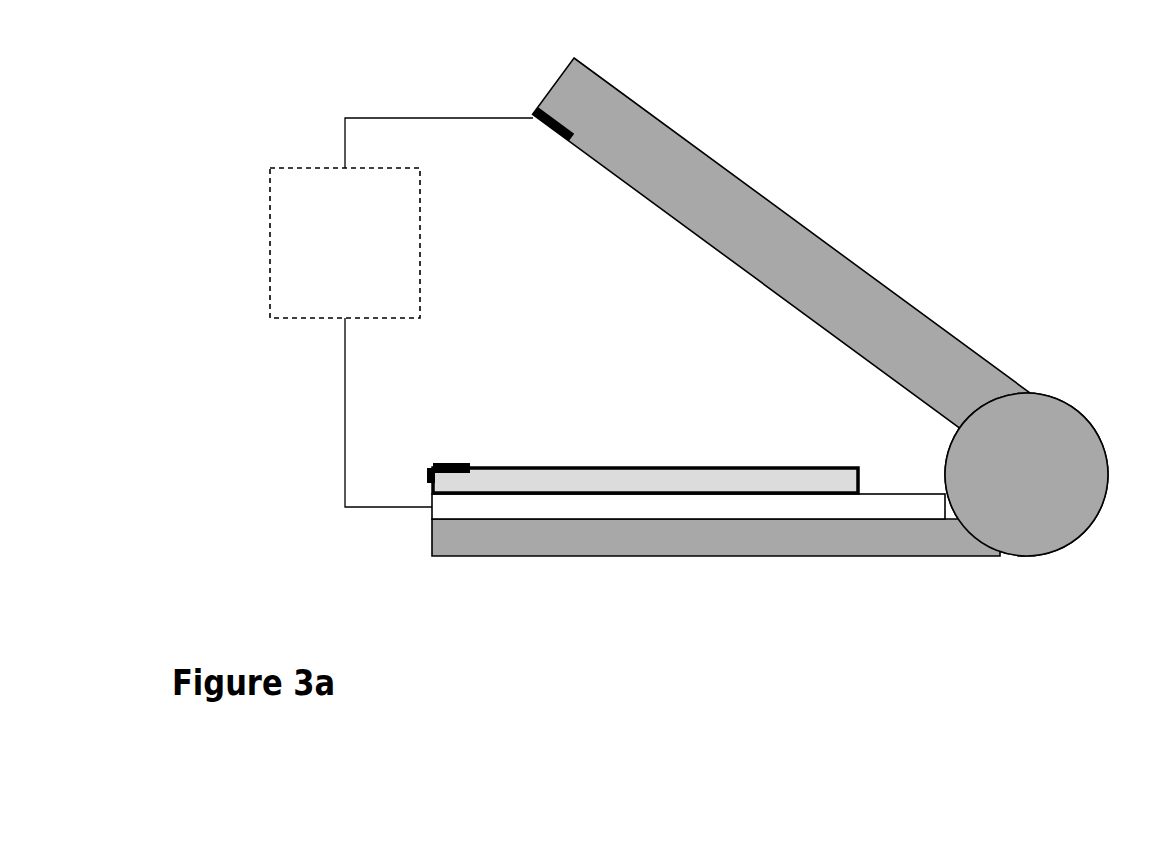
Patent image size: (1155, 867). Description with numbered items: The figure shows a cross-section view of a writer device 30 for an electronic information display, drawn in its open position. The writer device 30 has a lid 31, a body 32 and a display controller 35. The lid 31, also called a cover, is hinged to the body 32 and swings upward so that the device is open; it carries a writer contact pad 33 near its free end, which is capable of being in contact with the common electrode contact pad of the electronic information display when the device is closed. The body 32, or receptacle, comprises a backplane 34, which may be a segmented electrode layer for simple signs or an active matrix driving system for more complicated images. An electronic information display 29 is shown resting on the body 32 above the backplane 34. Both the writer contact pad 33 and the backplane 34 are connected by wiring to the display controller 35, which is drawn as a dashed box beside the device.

The sensor 29 is at (621, 475).
The writer device 30 is at (769, 363).
The lid 31 is at (797, 226).
The body 32 is at (683, 548).
The writer contact pad 33 is at (533, 138).
The backplane 34 is at (833, 511).
The display controller 35 is at (401, 312).